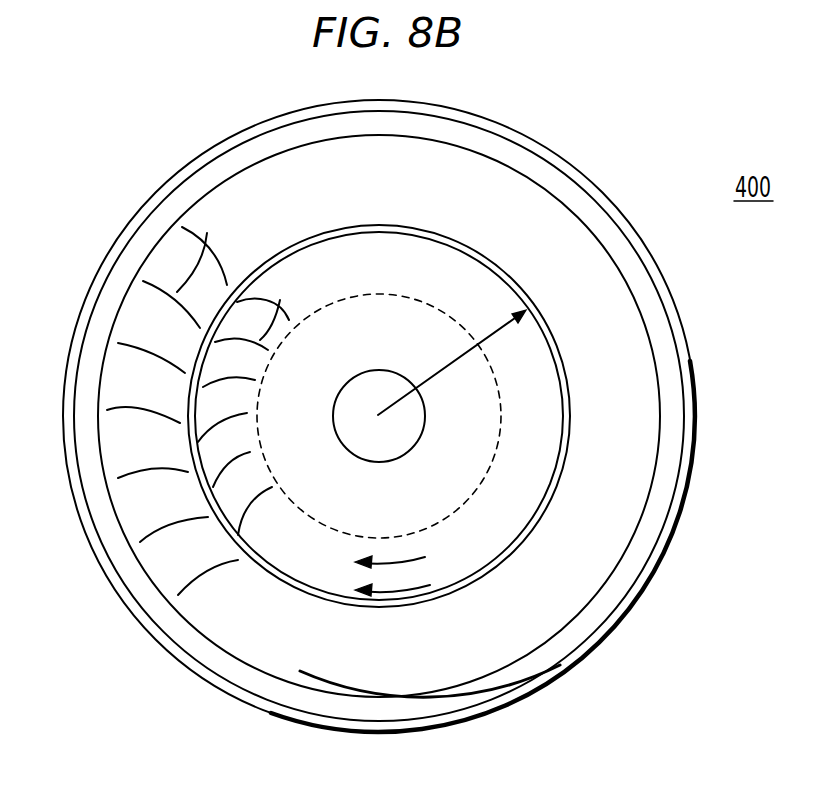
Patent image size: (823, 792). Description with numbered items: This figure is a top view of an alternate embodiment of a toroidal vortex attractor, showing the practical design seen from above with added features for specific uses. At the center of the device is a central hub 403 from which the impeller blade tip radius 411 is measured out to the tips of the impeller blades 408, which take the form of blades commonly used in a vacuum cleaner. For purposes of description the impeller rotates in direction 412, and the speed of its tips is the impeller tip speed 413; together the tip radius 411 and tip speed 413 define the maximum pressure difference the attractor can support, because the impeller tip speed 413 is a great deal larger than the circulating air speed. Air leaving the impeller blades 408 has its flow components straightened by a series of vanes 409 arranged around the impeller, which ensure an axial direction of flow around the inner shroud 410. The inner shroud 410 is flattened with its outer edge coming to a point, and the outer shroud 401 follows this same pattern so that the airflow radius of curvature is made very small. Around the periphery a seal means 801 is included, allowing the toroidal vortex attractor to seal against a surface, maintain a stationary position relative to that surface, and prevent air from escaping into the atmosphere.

The outer shroud 401 is at (125, 223).
The central hub 403 is at (409, 450).
The impeller blades 408 is at (280, 300).
The vanes 409 is at (207, 233).
The inner shroud 410 is at (542, 227).
The impeller blade tip radius 411 is at (438, 373).
The direction of impeller rotation 412 is at (393, 561).
The impeller tip speed 413 is at (397, 591).
The seal means 801 is at (502, 683).